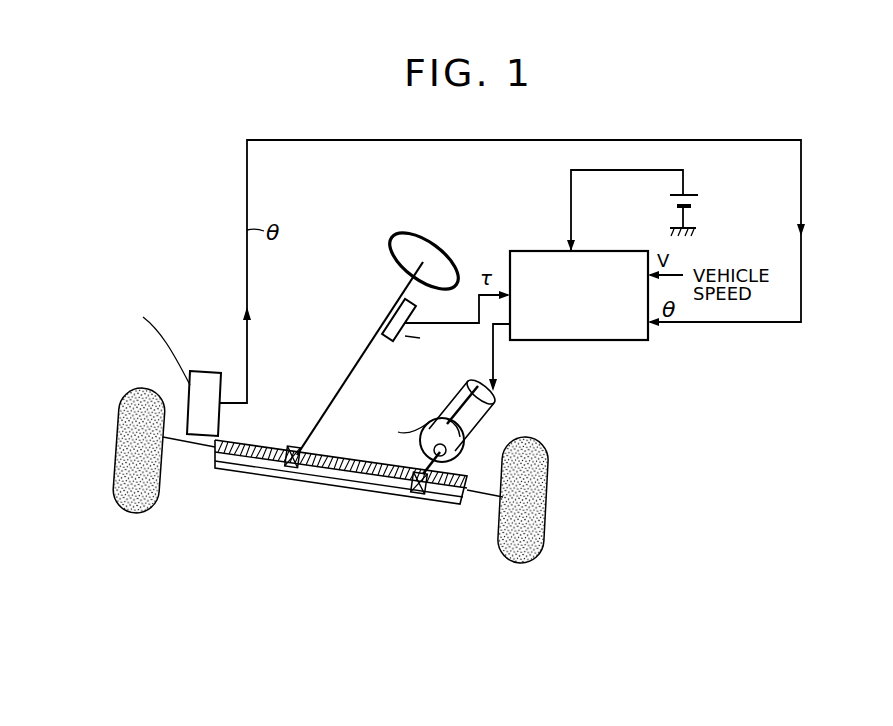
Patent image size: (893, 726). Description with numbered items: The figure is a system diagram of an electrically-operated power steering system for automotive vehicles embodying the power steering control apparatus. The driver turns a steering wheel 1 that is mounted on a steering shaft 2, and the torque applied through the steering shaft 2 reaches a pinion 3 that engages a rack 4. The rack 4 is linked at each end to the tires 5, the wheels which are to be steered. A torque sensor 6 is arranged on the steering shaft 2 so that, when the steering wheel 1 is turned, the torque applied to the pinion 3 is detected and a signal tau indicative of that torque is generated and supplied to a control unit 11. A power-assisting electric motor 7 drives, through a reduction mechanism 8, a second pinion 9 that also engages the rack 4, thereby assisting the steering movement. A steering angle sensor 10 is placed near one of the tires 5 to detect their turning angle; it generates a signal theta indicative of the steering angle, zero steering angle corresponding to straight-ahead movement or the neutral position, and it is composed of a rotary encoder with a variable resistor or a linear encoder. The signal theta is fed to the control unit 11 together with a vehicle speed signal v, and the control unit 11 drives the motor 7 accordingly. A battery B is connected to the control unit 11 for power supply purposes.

The steering wheel 1 is at (428, 242).
The steering shaft 2 is at (362, 352).
The pinion 3 is at (291, 448).
The rack 4 is at (315, 497).
The tires 5 is at (157, 482).
The torque sensor 6 is at (388, 345).
The power-assisting electric motor 7 is at (492, 409).
The reduction mechanism 8 is at (445, 415).
The pinion 9 is at (422, 494).
The steering angle sensor 10 is at (207, 371).
The control unit 11 is at (623, 341).
The battery B is at (695, 210).